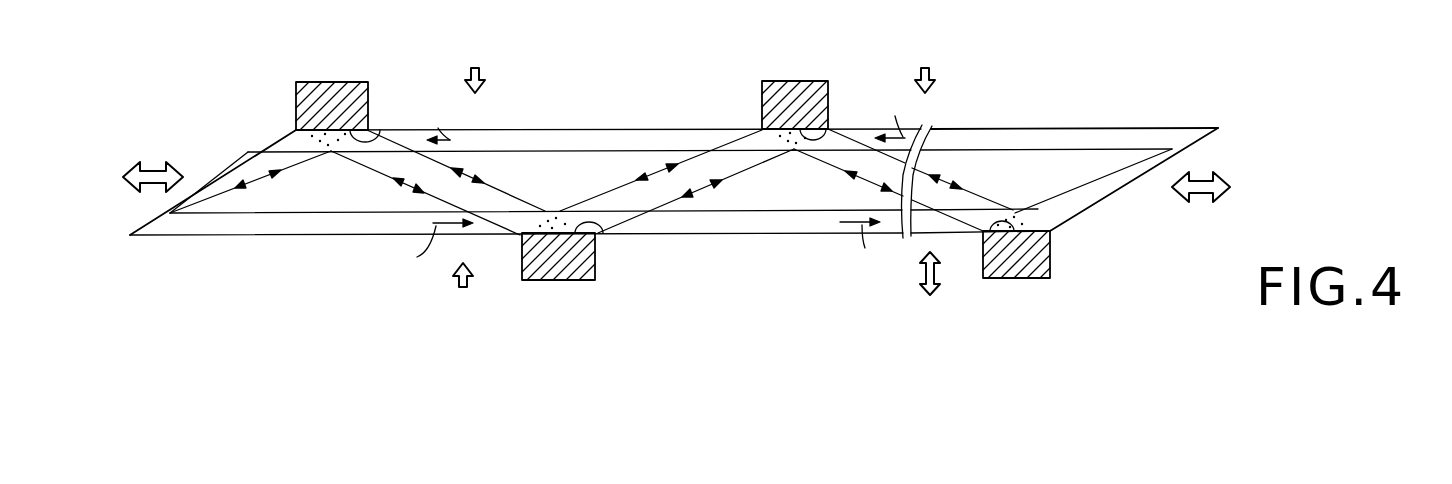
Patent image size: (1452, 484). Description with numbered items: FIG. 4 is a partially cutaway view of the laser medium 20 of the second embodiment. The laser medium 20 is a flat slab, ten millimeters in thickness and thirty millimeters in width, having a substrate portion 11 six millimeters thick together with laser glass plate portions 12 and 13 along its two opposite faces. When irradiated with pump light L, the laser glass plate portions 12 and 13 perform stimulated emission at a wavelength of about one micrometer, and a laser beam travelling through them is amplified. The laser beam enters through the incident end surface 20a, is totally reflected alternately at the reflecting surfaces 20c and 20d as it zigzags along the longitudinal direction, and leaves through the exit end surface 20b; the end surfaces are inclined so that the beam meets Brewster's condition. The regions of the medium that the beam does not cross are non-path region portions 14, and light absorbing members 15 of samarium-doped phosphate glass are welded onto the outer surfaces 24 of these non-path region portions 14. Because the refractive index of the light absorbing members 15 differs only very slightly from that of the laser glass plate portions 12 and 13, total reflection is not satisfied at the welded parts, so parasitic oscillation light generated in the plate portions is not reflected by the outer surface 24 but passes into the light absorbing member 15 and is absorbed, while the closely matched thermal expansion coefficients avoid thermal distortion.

The substrate portion 11 is at (674, 179).
The laser glass plate portion 12 is at (535, 128).
The laser glass plate portion 13 is at (355, 236).
The non-path region portion 14 is at (372, 133).
The light absorbing member 15 is at (365, 82).
The laser medium 20 is at (800, 328).
The incident end surface 20a is at (250, 146).
The exit end surface 20b is at (1110, 200).
The reflecting surface 20c is at (636, 128).
The reflecting surface 20d is at (736, 228).
The outer surface 24 is at (333, 127).